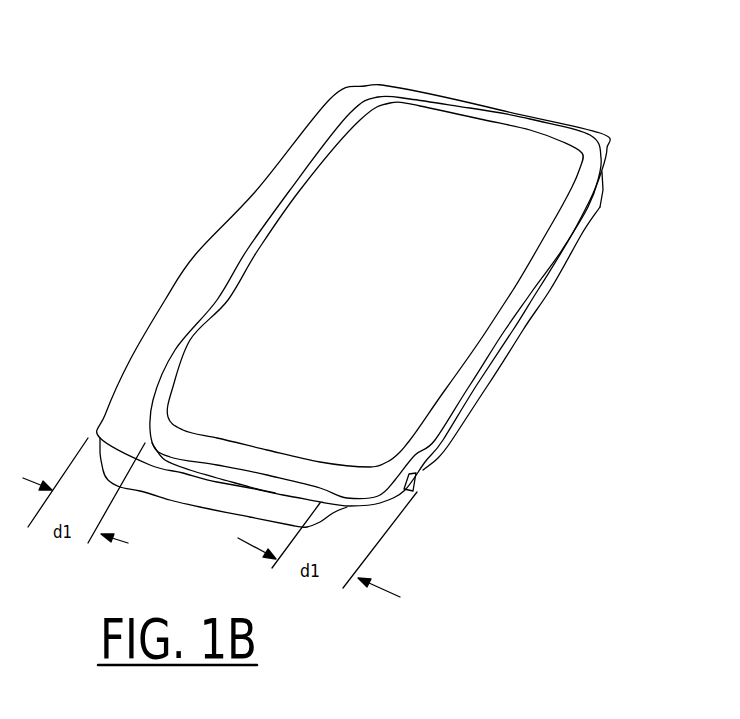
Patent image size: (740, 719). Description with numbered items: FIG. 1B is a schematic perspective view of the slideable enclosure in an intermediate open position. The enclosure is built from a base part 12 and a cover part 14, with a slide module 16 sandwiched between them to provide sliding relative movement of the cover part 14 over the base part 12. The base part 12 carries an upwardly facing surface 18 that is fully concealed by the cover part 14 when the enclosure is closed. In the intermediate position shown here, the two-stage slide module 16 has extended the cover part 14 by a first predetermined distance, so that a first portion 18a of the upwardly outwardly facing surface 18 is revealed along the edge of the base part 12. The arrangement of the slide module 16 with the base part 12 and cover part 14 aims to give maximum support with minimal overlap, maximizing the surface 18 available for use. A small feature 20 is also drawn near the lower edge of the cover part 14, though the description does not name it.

The base part 12 is at (181, 252).
The cover part 14 is at (485, 92).
The slide module 16 is at (547, 327).
The upwardly facing surface 18 is at (243, 194).
The first portion of the upwardly facing surface 18a is at (344, 85).
The notch / tab 20 is at (425, 476).